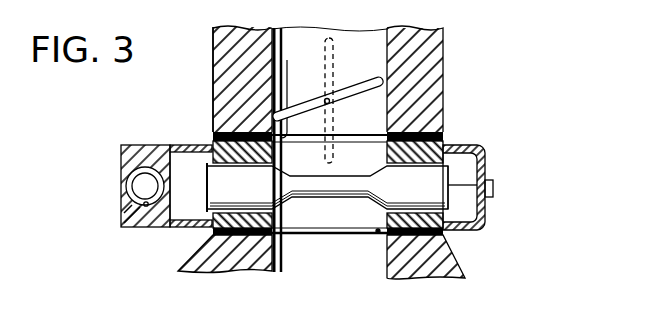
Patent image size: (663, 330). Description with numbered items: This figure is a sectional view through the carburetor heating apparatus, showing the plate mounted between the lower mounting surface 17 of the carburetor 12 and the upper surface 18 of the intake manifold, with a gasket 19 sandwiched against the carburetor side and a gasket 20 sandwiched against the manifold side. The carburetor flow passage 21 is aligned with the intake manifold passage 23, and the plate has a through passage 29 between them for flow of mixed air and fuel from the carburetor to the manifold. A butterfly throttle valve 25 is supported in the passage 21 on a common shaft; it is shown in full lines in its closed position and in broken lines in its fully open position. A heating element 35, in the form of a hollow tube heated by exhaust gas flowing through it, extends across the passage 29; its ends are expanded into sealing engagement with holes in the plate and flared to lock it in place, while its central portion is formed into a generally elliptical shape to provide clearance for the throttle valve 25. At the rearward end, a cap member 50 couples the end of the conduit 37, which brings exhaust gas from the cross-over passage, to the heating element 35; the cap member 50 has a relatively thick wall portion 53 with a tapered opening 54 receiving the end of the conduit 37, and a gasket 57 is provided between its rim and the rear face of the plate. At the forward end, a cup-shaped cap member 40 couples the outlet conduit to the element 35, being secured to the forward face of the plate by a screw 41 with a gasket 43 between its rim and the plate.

The carburetor 12 is at (457, 32).
The lower mounting surface 17 is at (212, 120).
The upper surface 18 is at (378, 234).
The gasket 19 is at (445, 140).
The gasket 20 is at (242, 271).
The flow passage 21 is at (291, 31).
The passage 23 is at (280, 272).
The butterfly throttle valve 25 is at (372, 80).
The through passage 29 is at (283, 218).
The heating element 35 is at (325, 185).
The conduit 37 is at (130, 188).
The cap member 40 is at (490, 151).
The screw 41 is at (494, 187).
The gasket 43 is at (443, 233).
The cap member 50 is at (120, 145).
The wall portion 53 is at (128, 208).
The tapered opening 54 is at (146, 207).
The gasket 57 is at (210, 235).